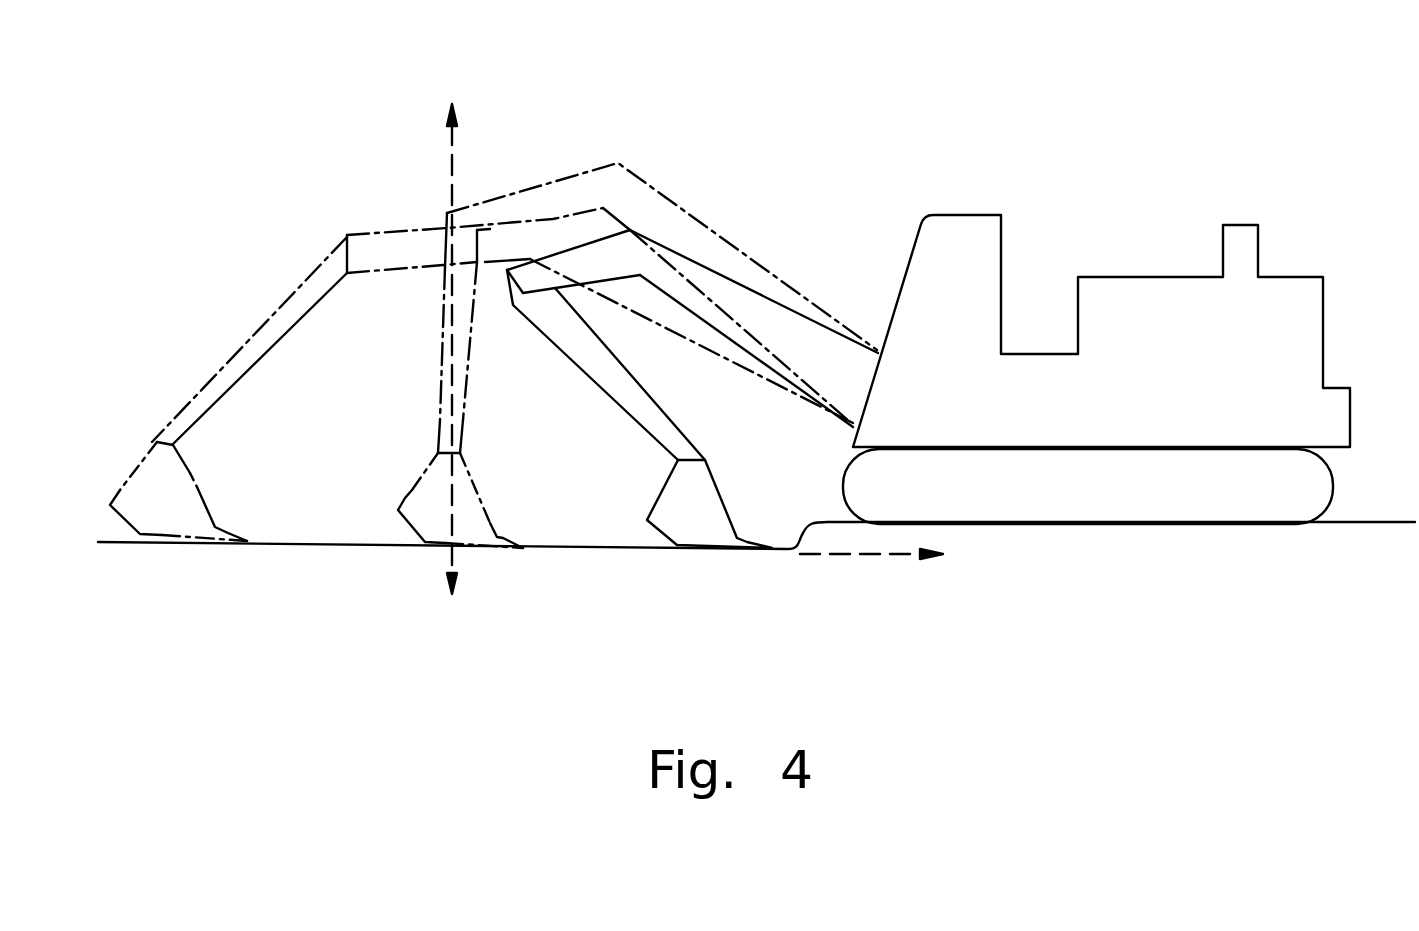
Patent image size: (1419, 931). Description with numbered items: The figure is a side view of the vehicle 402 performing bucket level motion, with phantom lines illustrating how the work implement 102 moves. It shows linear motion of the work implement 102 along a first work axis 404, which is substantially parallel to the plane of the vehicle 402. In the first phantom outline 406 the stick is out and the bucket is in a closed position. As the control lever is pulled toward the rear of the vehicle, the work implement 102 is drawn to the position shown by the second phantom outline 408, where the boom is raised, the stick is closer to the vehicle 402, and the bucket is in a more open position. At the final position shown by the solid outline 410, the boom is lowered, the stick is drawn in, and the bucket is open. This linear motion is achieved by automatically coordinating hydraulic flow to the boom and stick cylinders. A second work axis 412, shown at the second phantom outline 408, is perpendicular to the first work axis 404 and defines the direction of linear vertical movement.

The work implement 102 is at (665, 180).
The vehicle 402 is at (1170, 405).
The first work axis 404 is at (843, 555).
The first phantom outline 406 is at (300, 292).
The second phantom outline 408 is at (443, 362).
The solid outline 410 is at (623, 393).
The second work axis 412 is at (452, 557).